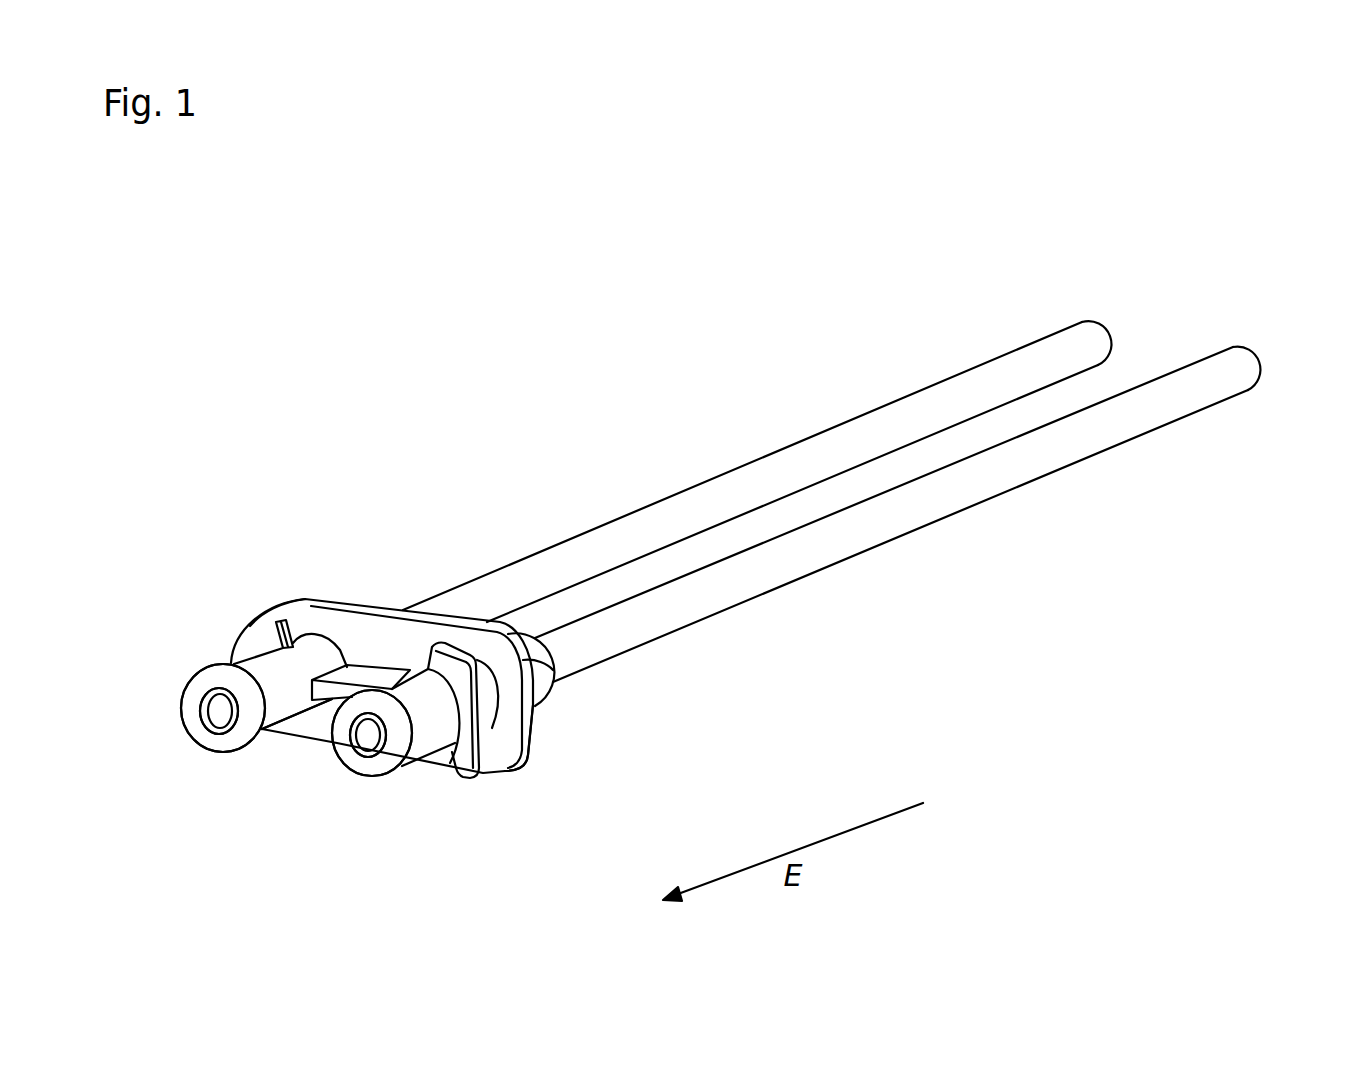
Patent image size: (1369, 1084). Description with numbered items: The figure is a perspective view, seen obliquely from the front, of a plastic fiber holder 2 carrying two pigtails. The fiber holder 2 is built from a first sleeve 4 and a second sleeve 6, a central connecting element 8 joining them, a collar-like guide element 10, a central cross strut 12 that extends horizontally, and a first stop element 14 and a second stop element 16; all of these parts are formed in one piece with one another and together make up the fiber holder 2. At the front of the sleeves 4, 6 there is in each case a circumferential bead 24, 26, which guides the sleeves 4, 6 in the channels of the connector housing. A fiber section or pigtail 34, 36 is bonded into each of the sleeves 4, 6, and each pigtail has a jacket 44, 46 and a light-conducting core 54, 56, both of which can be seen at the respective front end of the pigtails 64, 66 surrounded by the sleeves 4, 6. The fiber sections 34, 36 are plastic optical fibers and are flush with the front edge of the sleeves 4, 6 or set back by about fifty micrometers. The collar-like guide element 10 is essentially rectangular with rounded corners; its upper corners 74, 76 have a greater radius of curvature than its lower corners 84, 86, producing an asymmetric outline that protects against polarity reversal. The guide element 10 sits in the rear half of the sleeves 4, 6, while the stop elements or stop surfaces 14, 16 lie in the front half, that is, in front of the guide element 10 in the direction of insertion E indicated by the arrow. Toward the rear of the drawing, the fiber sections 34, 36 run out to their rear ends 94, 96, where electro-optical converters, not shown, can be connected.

The fiber holder 2 is at (345, 595).
The first sleeve 4 is at (440, 720).
The second sleeve 6 is at (278, 712).
The central connecting element 8 is at (387, 665).
The collar-like guide element 10 is at (535, 720).
The central cross strut 12 is at (357, 680).
The first stop element 14 is at (484, 756).
The second stop element 16 is at (238, 644).
The circumferential bead 24 is at (403, 752).
The circumferential bead 26 is at (188, 710).
The fiber section 34 is at (757, 577).
The fiber section 36 is at (708, 502).
The jacket 44 is at (352, 752).
The jacket 46 is at (213, 715).
The light-conducting core 54 is at (370, 738).
The light-conducting core 56 is at (210, 722).
The front end of pigtail 64 is at (381, 752).
The front end of pigtail 66 is at (230, 735).
The upper corner 74 is at (548, 666).
The upper corner 76 is at (289, 602).
The lower corner 84 is at (538, 760).
The lower corner 86 is at (275, 715).
The rear end of fiber section 94 is at (1257, 368).
The rear end of fiber section 96 is at (1103, 343).